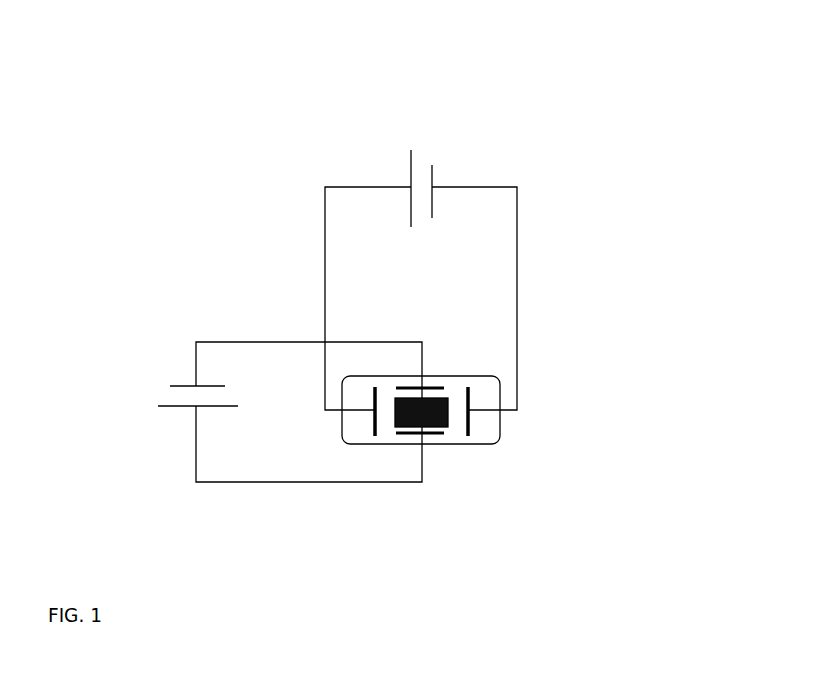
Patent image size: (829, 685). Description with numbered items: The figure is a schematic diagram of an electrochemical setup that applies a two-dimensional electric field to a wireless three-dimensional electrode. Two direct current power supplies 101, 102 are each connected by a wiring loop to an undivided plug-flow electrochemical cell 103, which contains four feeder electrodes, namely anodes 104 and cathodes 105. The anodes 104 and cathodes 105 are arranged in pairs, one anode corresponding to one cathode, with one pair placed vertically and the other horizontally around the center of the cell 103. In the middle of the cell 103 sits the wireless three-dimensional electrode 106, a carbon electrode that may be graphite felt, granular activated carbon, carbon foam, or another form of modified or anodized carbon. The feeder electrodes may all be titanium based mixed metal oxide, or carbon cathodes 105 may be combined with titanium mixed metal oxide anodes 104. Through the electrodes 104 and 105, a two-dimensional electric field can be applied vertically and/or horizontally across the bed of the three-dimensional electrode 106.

The direct current power supply 101 is at (432, 148).
The direct current power supply 102 is at (173, 370).
The undivided plug-flow electrochemical cell 103 is at (497, 445).
The anode 104 is at (423, 392).
The cathode 105 is at (373, 402).
The wireless 3D electrode 106 is at (448, 427).